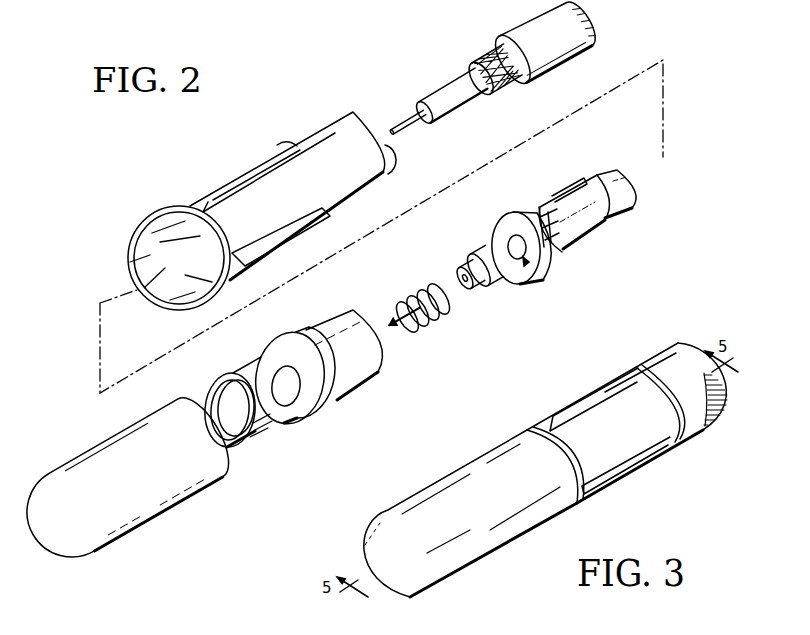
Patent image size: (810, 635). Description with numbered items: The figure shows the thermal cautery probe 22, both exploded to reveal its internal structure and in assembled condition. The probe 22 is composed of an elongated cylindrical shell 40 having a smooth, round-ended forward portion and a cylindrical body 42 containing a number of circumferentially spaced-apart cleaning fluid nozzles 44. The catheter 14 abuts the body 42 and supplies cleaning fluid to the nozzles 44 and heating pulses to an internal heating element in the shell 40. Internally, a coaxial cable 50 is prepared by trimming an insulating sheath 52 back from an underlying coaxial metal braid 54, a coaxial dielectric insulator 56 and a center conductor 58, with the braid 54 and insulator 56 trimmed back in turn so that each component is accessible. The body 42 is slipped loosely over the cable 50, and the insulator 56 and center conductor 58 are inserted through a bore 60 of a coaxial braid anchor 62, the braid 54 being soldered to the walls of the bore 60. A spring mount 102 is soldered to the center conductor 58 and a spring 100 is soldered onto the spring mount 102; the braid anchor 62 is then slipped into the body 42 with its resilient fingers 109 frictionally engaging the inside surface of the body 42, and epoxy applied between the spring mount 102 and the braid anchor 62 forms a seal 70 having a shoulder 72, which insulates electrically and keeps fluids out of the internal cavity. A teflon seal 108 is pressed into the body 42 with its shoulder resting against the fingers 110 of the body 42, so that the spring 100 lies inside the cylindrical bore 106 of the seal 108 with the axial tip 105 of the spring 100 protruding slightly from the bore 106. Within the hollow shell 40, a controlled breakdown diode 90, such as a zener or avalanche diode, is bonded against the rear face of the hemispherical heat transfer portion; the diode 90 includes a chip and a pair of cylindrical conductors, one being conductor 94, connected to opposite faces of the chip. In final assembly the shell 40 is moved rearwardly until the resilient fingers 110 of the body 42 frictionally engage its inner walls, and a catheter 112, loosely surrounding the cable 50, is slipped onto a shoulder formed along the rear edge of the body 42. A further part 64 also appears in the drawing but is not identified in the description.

In FIG. 3, the catheter 14 is at (545, 445).
In FIG. 3, the probe 22 is at (448, 458).
In FIG. 2, the shell 40 is at (167, 493).
In FIG. 3, the shell 40 is at (407, 513).
In FIG. 2, the body 42 is at (210, 187).
In FIG. 3, the body 42 is at (557, 413).
In FIG. 2, the cleaning fluid nozzles 44 is at (257, 175).
In FIG. 3, the cleaning fluid nozzles 44 is at (600, 397).
In FIG. 2, the coaxial cable 50 is at (520, 25).
In FIG. 2, the insulating sheath 52 is at (537, 68).
In FIG. 2, the coaxial metal braid 54 is at (497, 87).
In FIG. 2, the coaxial dielectric insulator 56 is at (458, 108).
In FIG. 2, the center conductor 58 is at (412, 125).
In FIG. 2, the bore 60 is at (550, 218).
In FIG. 2, the coaxial braid anchor 62 is at (597, 230).
In FIG. 2, the collet shank 64 is at (622, 208).
In FIG. 2, the seal 70 is at (530, 270).
In FIG. 2, the shoulder 72 is at (512, 238).
In FIG. 2, the diode 90 is at (266, 432).
In FIG. 2, the cylindrical conductor 94 is at (236, 437).
In FIG. 2, the spring 100 is at (412, 297).
In FIG. 2, the spring mount 102 is at (482, 284).
In FIG. 2, the axial tip 105 is at (392, 326).
In FIG. 2, the cylindrical bore 106 is at (290, 405).
In FIG. 2, the teflon seal 108 is at (340, 390).
In FIG. 2, the resilient fingers 109 is at (583, 205).
In FIG. 2, the resilient fingers 110 is at (157, 233).
In FIG. 3, the catheter 112 is at (650, 358).